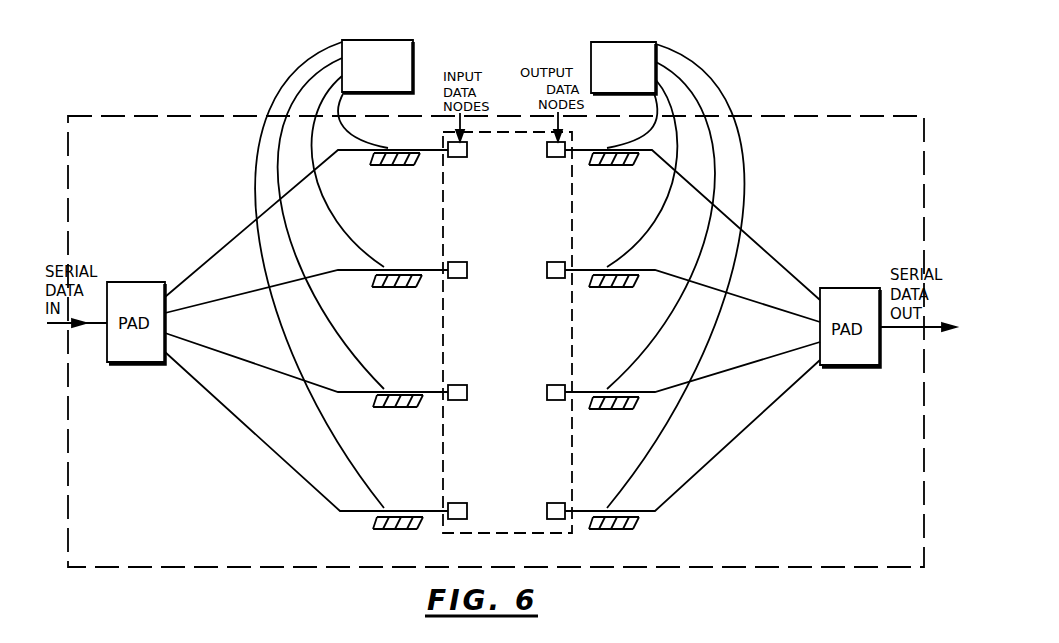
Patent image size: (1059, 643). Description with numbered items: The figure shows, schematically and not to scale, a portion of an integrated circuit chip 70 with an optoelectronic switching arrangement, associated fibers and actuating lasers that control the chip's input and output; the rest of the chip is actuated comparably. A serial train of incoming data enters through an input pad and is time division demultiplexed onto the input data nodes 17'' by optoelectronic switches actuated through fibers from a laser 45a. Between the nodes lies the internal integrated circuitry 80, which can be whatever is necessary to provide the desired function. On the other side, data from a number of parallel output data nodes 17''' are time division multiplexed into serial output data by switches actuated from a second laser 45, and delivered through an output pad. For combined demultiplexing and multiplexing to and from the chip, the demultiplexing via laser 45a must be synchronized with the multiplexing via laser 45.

The laser 45a is at (413, 63).
The laser 45 is at (632, 42).
The integrated circuit chip 70 is at (747, 115).
The internal integrated circuitry 80 is at (512, 130).
The input data nodes 17'' is at (466, 330).
The output data nodes 17''' is at (546, 330).